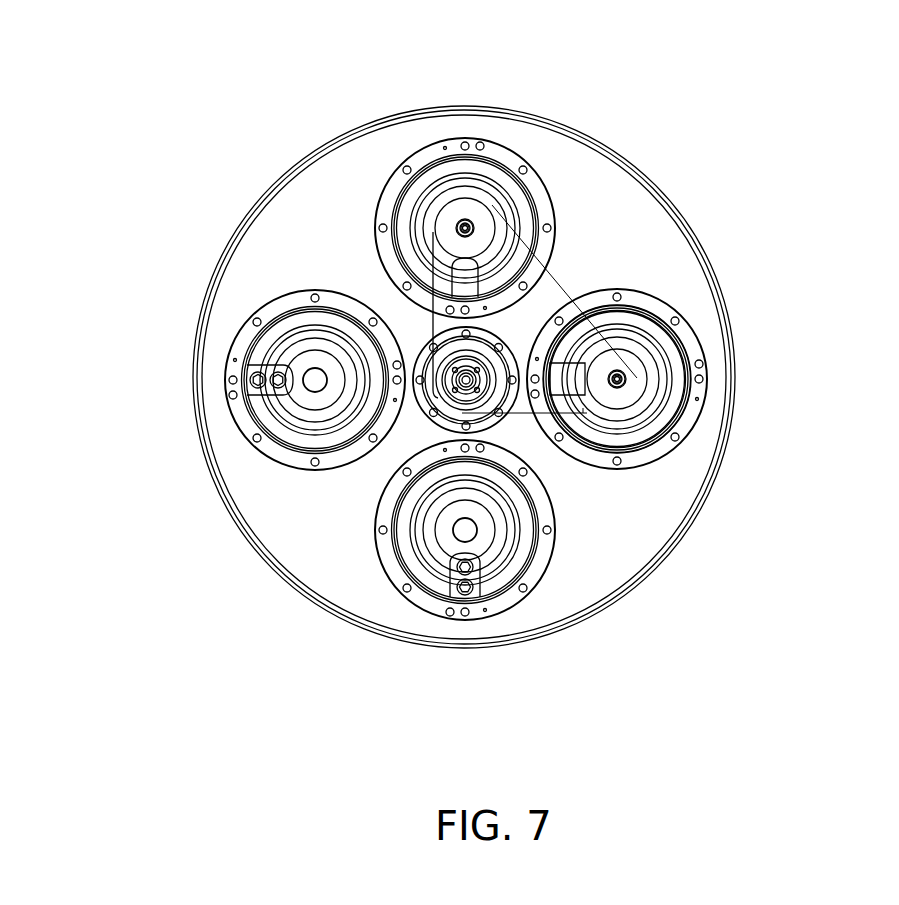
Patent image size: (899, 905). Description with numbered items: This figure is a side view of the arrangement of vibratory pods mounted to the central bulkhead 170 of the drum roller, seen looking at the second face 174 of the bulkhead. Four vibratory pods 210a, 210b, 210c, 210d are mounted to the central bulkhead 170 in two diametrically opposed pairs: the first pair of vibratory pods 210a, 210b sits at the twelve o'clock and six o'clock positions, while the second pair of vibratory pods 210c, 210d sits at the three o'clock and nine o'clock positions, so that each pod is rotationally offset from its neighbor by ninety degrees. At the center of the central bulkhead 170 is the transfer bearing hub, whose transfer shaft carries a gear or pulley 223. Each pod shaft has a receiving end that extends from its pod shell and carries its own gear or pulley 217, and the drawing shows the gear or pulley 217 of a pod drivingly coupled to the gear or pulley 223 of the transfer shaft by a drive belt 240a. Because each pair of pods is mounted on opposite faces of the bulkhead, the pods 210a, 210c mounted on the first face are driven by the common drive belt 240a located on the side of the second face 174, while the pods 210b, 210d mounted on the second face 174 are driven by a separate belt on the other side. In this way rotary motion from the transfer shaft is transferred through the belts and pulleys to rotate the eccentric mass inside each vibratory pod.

The central bulkhead 170 is at (635, 217).
The second face 174 is at (317, 540).
The vibratory pod 210a is at (485, 173).
The vibratory pod 210b is at (442, 588).
The vibratory pod 210c is at (665, 418).
The vibratory pod 210d is at (287, 430).
The gear or pulley 217 is at (448, 228).
The gear or pulley 223 is at (487, 400).
The drive belt 240a is at (573, 283).